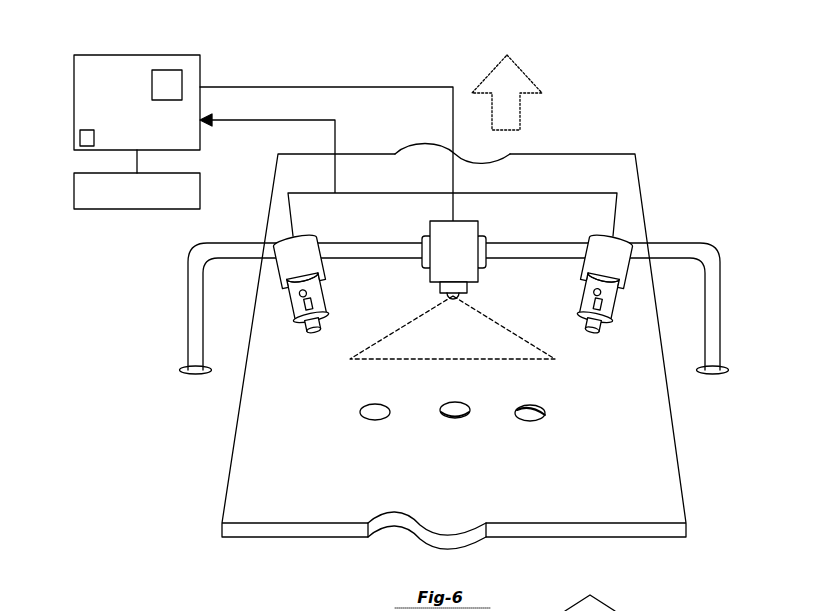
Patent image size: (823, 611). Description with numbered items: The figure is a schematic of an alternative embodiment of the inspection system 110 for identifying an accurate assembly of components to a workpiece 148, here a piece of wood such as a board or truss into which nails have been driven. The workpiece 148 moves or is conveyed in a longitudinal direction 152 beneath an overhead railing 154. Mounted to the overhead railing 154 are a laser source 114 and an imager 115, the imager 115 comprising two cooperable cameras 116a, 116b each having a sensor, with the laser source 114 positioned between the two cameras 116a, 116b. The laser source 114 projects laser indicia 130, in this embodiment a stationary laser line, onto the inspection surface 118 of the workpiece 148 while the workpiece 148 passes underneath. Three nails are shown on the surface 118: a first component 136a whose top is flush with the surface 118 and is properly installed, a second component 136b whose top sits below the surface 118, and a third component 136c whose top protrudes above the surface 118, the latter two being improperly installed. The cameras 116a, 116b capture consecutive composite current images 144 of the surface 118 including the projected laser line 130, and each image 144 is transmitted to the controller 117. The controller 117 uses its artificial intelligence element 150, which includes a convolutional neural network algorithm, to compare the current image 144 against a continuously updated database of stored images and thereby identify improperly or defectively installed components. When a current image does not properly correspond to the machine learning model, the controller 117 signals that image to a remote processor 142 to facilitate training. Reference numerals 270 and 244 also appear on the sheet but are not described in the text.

The system 110 is at (627, 127).
The laser source 114 is at (454, 260).
The imager 115 is at (284, 311).
The first cooperable camera 116a is at (286, 238).
The second cooperable camera 116b is at (620, 240).
The controller 117 is at (135, 55).
The inspection surface 118 is at (314, 394).
The laser indicia 130 is at (527, 362).
The first component 136a is at (365, 420).
The second component 136b is at (461, 420).
The third component 136c is at (543, 418).
The remote processor 142 is at (172, 213).
The current image 144 is at (167, 70).
The workpiece 148 is at (683, 478).
The artificial intelligence element 150 is at (80, 138).
The longitudinal direction 152 is at (514, 82).
The overhead railing 154 is at (722, 308).
The hopper 270 is at (595, 600).
The feeder 244 is at (665, 610).